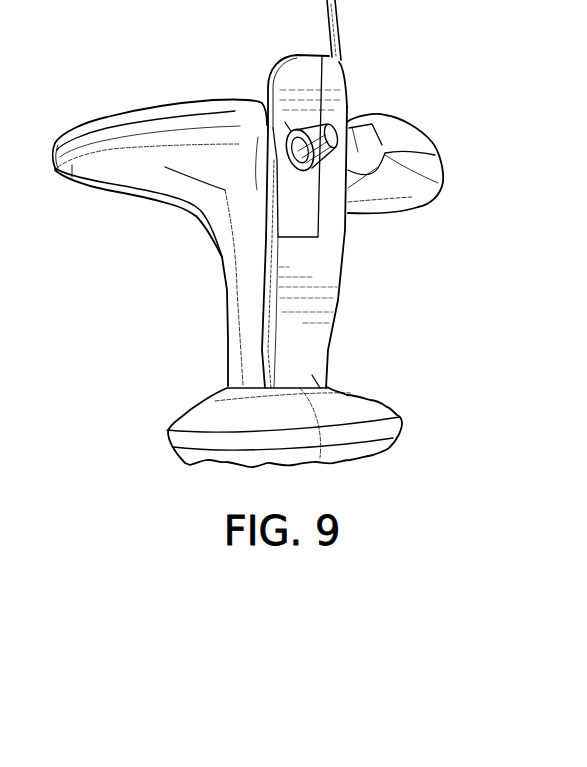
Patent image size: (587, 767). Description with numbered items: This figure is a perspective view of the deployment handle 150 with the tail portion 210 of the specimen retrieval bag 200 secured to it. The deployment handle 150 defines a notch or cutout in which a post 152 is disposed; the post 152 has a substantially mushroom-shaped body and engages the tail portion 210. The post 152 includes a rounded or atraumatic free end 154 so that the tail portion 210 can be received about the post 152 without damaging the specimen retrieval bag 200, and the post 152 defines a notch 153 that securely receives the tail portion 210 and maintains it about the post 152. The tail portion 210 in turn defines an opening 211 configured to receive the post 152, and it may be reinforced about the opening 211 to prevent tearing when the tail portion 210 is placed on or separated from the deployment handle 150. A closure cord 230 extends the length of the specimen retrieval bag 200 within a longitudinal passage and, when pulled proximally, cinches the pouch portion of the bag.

The deployment handle 150 is at (120, 213).
The post 152 is at (281, 115).
The notch 153 is at (292, 152).
The rounded or atraumatic free end 154 is at (348, 123).
The specimen retrieval bag 200 is at (320, 261).
The tail portion 210 is at (357, 92).
The opening 211 is at (220, 243).
The closure cord 230 is at (346, 33).